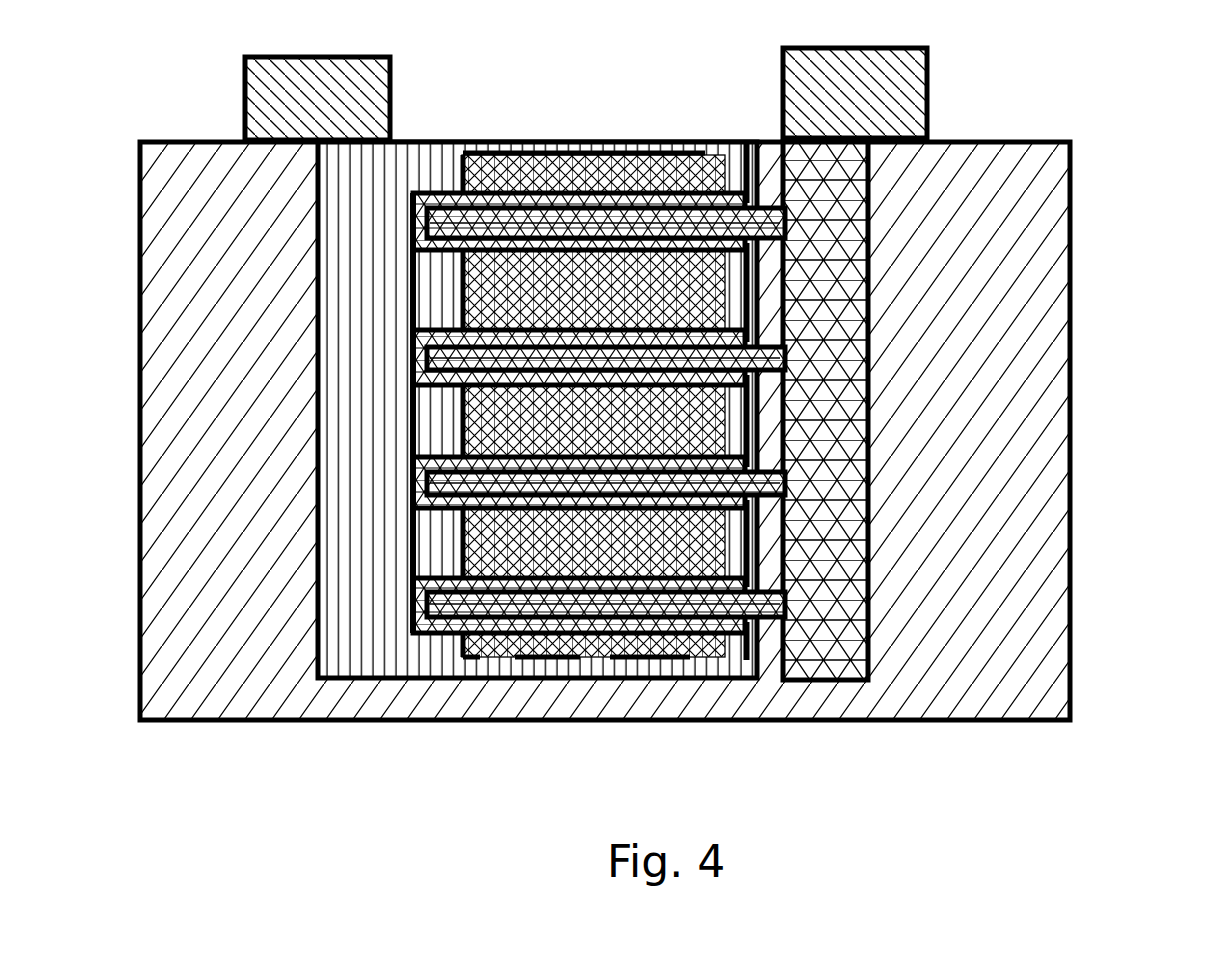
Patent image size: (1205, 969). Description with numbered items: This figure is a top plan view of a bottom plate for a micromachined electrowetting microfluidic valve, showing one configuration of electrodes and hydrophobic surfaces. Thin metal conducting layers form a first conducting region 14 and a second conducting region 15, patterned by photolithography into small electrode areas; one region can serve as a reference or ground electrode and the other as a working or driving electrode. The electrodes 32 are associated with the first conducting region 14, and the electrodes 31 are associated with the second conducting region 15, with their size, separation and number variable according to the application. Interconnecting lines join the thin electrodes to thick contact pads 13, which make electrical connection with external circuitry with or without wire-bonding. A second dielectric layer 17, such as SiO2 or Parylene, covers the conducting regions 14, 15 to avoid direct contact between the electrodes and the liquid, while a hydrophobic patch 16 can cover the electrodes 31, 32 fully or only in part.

The contact pads 13 is at (273, 104).
The first conducting region 14 is at (372, 183).
The second conducting region 15 is at (828, 392).
The hydrophobic patch 16 is at (520, 175).
The second dielectric layer 17 is at (1000, 627).
The electrodes 31 is at (433, 610).
The electrodes 32 is at (757, 540).